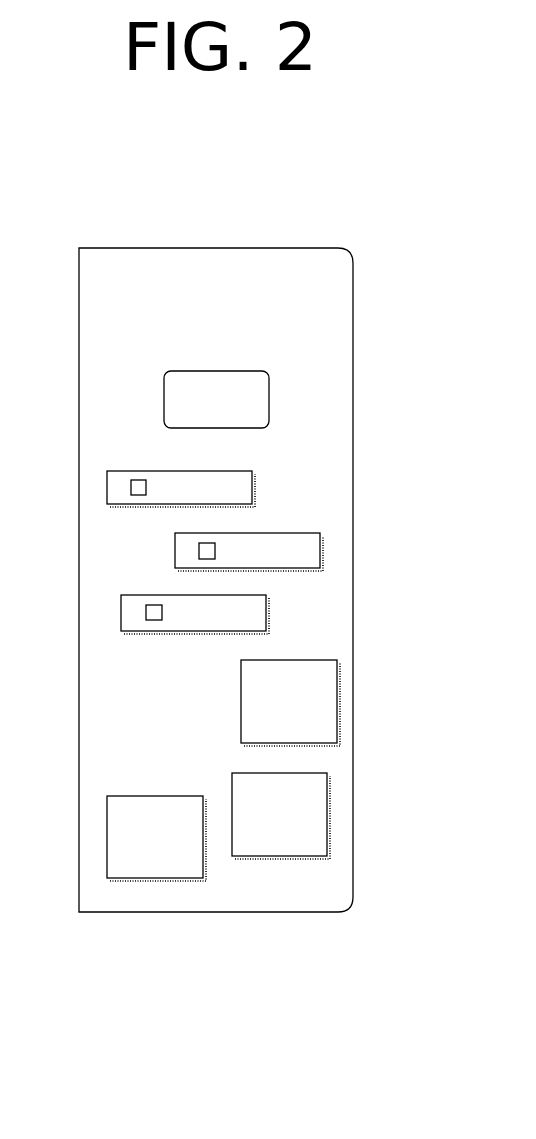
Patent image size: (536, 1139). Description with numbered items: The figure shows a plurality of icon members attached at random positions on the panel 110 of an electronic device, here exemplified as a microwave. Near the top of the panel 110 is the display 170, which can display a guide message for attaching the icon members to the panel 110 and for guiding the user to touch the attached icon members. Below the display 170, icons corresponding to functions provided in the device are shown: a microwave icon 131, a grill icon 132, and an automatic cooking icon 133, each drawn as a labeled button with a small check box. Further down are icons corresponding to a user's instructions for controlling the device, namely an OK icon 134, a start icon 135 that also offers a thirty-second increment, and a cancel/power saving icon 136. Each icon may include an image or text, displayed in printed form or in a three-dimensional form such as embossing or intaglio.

The panel 110 is at (237, 248).
The display 170 is at (269, 398).
The microwave icon 131 is at (252, 484).
The grill icon 132 is at (320, 548).
The automatic cooking icon 133 is at (266, 610).
The OK icon 134 is at (337, 697).
The start icon 135 is at (327, 803).
The cancel/power saving icon 136 is at (167, 878).